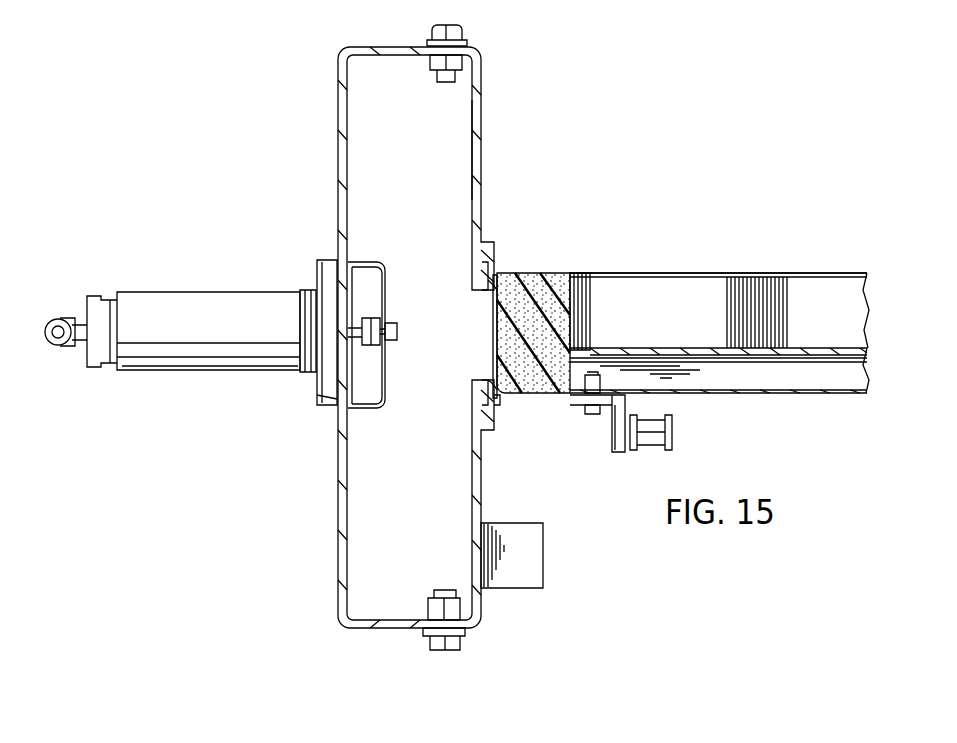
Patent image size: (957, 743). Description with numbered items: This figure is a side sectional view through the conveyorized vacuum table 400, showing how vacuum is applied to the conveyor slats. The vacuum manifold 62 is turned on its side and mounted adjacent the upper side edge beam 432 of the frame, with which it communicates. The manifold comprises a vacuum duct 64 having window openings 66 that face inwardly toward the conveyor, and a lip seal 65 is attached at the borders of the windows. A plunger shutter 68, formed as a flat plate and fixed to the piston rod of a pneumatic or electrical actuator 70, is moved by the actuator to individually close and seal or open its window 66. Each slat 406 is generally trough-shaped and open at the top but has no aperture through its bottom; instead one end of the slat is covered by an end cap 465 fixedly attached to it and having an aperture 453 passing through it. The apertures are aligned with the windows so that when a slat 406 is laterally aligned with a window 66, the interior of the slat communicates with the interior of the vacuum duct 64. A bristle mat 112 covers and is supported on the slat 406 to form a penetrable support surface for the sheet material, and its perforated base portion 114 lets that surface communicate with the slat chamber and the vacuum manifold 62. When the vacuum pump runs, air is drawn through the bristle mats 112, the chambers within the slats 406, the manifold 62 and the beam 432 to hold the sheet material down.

The vacuum manifold 62 is at (390, 78).
The vacuum duct 64 is at (481, 118).
The window opening 66 is at (492, 312).
The plunger shutter 68 is at (364, 265).
The actuator 70 is at (222, 292).
The bristle mat 112 is at (762, 274).
The perforated base portion 114 is at (632, 349).
The conveyorized vacuum table 400 is at (665, 225).
The slat 406 is at (775, 376).
The upper side edge beam 432 is at (543, 552).
The aperture 453 is at (492, 346).
The end cap 465 is at (529, 274).
The lip seal 65 is at (498, 398).